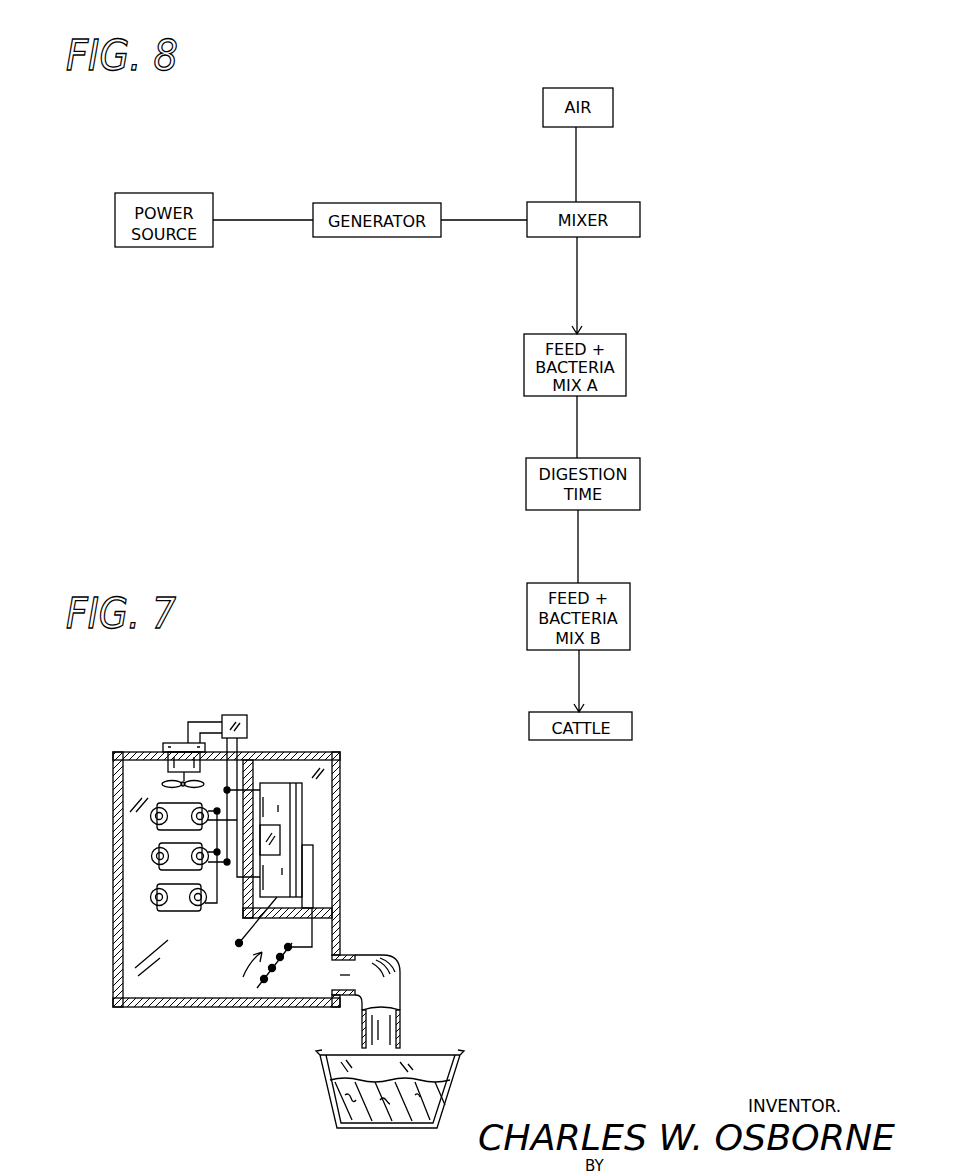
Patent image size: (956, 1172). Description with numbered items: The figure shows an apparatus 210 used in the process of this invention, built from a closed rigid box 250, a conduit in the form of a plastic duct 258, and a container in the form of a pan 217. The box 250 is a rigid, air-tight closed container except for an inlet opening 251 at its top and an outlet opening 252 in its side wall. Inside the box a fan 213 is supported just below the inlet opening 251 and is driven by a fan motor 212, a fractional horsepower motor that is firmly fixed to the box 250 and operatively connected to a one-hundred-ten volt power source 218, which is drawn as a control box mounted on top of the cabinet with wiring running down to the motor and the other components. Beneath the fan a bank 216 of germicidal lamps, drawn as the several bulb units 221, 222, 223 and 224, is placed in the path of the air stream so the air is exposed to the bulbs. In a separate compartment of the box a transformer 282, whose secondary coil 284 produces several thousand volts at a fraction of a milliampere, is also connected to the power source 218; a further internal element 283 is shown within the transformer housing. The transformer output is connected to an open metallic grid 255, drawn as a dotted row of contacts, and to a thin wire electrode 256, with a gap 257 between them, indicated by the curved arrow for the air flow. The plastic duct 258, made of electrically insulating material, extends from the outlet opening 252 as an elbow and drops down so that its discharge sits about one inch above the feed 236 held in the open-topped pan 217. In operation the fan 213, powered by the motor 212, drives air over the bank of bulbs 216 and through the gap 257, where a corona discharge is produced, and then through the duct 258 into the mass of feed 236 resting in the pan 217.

The apparatus 210 is at (356, 764).
The fan motor 212 is at (178, 784).
The fan 213 is at (168, 766).
The bank of lamps 216 is at (106, 857).
The pan 217 is at (332, 1088).
The power source 218 is at (247, 730).
The heating element 221 is at (150, 816).
The heating element 222 is at (193, 827).
The heating element 223 is at (151, 857).
The heating element 224 is at (135, 894).
The feed 236 is at (384, 1106).
The box 250 is at (283, 756).
The inlet opening 251 is at (163, 745).
The outlet opening 252 is at (340, 960).
The metallic grid 255 is at (281, 958).
The wire electrode 256 is at (237, 945).
The gap 257 is at (243, 977).
The plastic duct 258 is at (385, 1026).
The transformer 282 is at (358, 845).
The digester inner element 283 is at (275, 838).
The secondary coil 284 is at (285, 812).